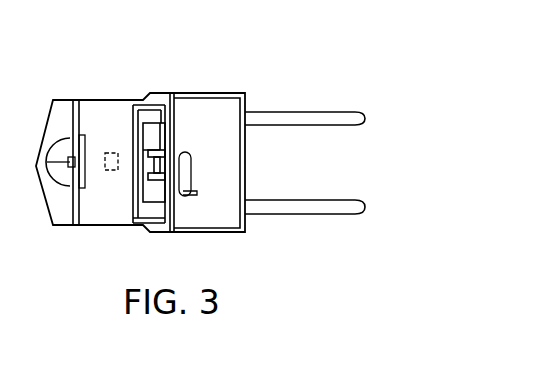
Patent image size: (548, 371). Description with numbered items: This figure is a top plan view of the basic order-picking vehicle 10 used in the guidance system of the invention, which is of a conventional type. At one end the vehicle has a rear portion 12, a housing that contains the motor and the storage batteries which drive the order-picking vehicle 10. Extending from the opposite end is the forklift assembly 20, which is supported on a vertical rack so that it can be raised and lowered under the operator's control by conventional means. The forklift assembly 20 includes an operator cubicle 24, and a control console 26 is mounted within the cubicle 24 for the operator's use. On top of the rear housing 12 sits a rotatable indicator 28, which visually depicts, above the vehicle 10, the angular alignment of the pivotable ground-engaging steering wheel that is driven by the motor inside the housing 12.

The order-picking vehicle 10 is at (113, 118).
The rear portion 12 is at (63, 101).
The forklift assembly 20 is at (262, 122).
The operator cubicle 24 is at (210, 93).
The control console 26 is at (194, 167).
The rotatable indicator 28 is at (60, 182).